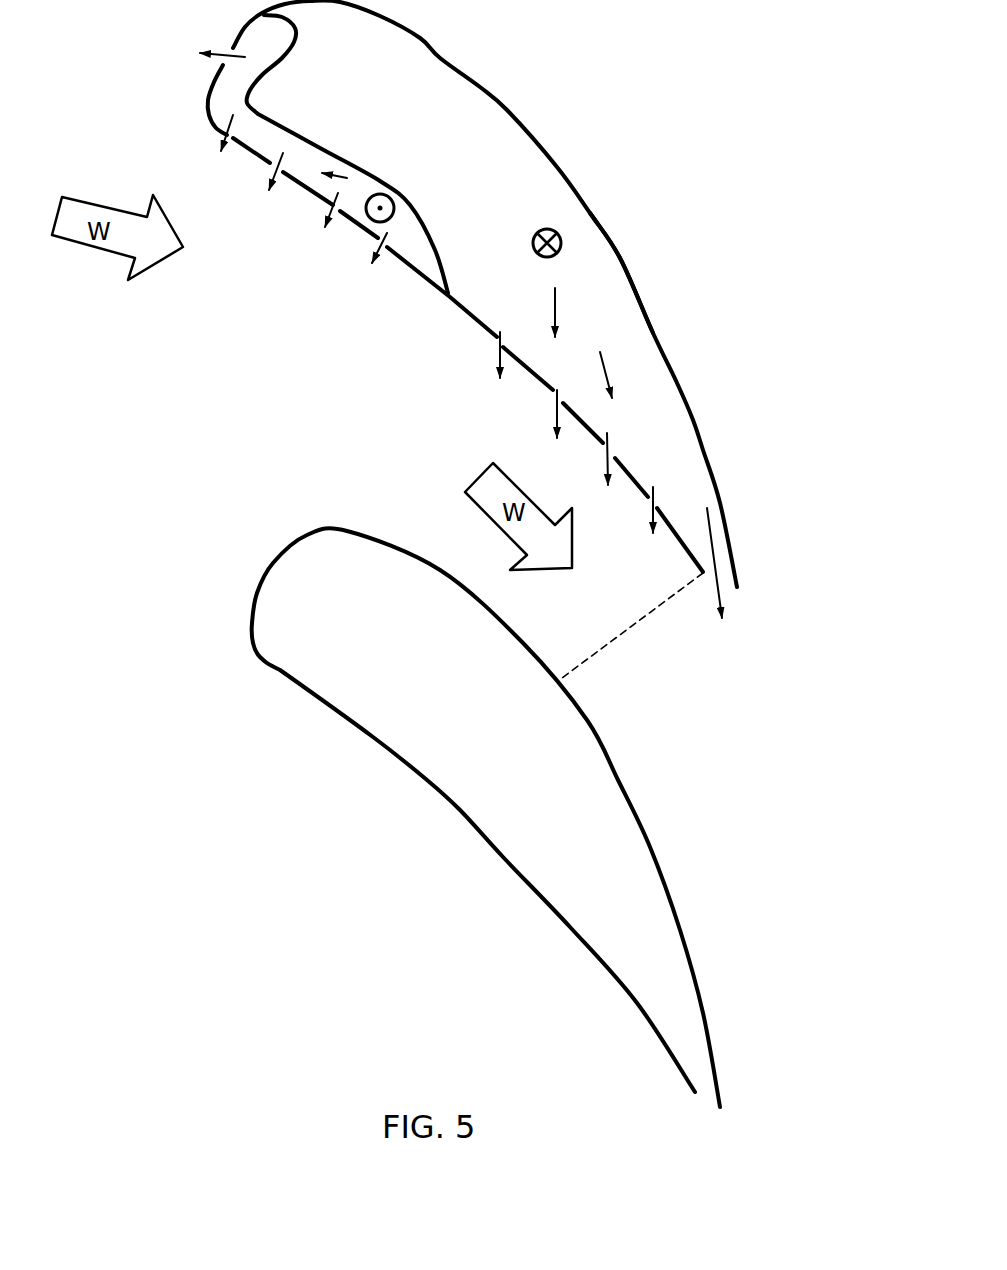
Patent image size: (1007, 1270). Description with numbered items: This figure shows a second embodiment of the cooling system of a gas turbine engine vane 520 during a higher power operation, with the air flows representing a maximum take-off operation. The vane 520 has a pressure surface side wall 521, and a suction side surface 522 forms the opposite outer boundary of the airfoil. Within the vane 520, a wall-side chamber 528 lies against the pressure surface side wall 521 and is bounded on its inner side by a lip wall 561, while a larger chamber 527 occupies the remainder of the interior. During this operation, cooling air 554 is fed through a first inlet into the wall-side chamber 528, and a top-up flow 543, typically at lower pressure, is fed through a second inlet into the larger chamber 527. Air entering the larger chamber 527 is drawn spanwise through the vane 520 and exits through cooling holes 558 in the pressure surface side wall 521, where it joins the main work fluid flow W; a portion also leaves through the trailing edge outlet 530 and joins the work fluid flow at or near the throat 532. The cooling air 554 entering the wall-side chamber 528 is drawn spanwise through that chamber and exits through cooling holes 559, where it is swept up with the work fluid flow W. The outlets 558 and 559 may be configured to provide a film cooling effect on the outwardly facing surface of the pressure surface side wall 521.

The vane 520 is at (617, 143).
The pressure surface side wall 521 is at (468, 318).
The suction side surface 522 is at (622, 250).
The larger chamber 527 is at (470, 129).
The wall-side chamber 528 is at (313, 153).
The trailing edge outlet 530 is at (728, 587).
The throat 532 is at (613, 637).
The top-up flow 543 is at (540, 230).
The cooling air 554 is at (396, 214).
The cooling holes 558 is at (496, 345).
The cooling holes 559 is at (277, 168).
The inner wall lip 561 is at (270, 108).